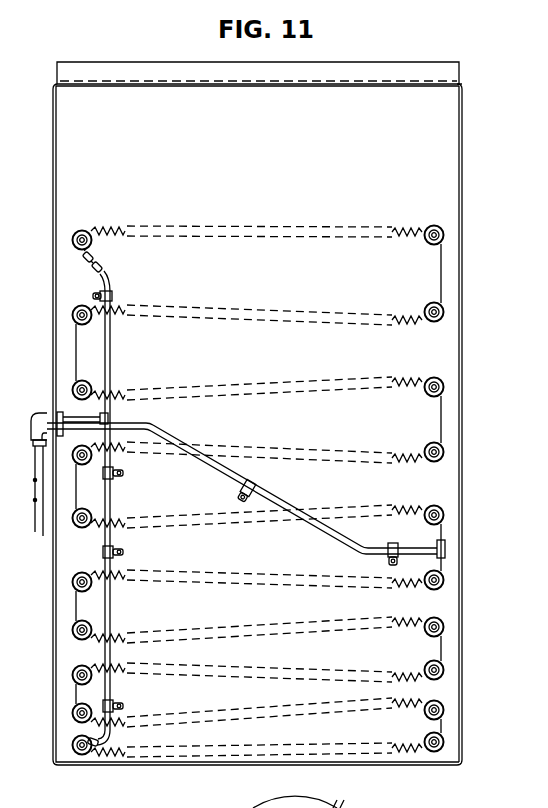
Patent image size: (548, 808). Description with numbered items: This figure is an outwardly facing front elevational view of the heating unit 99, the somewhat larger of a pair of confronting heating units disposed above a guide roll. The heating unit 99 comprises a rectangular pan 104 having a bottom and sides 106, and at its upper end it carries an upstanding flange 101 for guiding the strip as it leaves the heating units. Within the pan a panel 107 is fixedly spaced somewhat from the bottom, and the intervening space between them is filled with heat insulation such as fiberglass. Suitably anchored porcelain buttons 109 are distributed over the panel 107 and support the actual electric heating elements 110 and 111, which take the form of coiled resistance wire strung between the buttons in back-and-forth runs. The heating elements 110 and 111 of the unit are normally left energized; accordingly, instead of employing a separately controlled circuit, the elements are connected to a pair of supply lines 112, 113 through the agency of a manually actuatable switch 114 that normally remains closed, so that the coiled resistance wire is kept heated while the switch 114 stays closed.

The heating unit 99 is at (467, 224).
The upstanding flange 101 is at (143, 67).
The rectangular pan 104 is at (53, 117).
The sides 106 is at (465, 405).
The panel 107 is at (283, 193).
The porcelain buttons 109 is at (84, 229).
The electric heating element 110 is at (274, 665).
The electric heating element 111 is at (239, 318).
The supply line 112 is at (32, 516).
The supply line 113 is at (32, 500).
The manually actuatable switch 114 is at (31, 489).